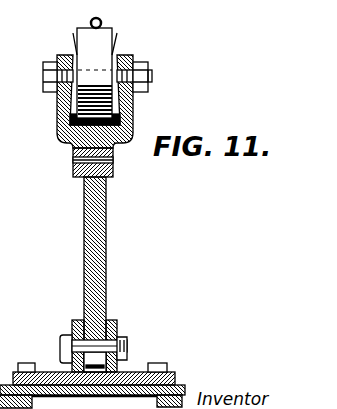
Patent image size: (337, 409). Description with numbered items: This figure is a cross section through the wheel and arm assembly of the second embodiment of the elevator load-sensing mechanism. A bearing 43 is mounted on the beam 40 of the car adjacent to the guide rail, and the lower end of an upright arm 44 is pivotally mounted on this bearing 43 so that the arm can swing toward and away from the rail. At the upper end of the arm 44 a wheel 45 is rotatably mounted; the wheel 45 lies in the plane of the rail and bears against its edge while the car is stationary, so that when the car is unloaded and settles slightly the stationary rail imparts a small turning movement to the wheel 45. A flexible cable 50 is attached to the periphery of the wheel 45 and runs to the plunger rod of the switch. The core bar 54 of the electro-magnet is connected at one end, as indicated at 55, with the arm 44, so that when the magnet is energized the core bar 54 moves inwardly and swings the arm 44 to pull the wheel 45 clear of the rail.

The beam 40 is at (182, 390).
The bearing 43 is at (117, 339).
The upright arm 44 is at (108, 236).
The wheel 45 is at (102, 35).
The flexible cable 50 is at (91, 20).
The core bar 54 is at (112, 173).
The connection of core bar to arm 55 is at (73, 162).